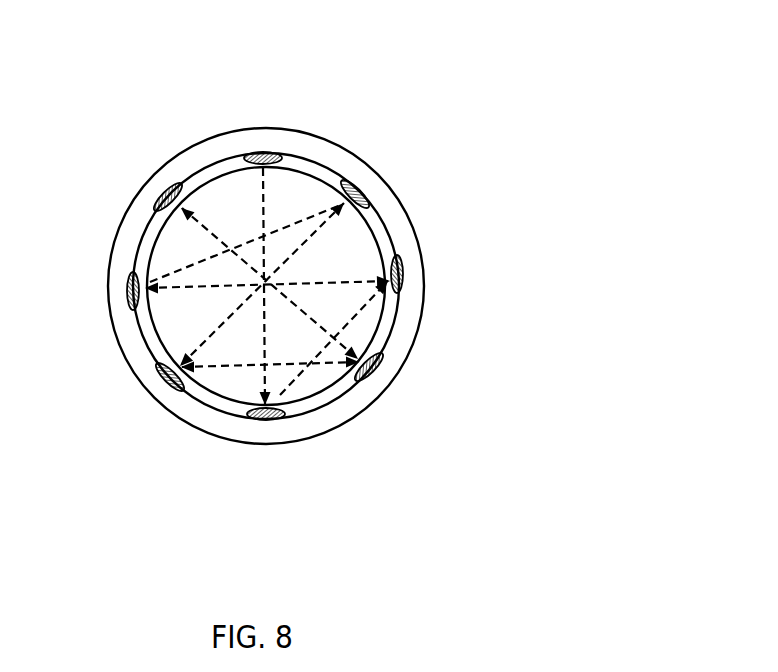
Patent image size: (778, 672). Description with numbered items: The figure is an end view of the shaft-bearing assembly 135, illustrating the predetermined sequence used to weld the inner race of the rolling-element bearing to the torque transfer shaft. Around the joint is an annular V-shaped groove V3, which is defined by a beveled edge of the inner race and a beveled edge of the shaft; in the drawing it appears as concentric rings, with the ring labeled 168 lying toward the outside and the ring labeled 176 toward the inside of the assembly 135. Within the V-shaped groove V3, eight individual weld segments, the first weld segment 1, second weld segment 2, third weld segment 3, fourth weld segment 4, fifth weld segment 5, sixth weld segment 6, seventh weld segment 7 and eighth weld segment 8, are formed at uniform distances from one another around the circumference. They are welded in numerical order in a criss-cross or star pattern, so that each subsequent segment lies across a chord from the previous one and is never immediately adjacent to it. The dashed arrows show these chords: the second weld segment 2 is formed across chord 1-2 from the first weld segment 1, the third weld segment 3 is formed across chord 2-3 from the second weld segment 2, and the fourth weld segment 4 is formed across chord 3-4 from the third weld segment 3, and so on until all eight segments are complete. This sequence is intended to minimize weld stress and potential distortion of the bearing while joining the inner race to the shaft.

The first weld segment 1 is at (268, 150).
The second weld segment 2 is at (267, 428).
The third weld segment 3 is at (412, 277).
The fourth weld segment 4 is at (116, 290).
The fifth weld segment 5 is at (367, 185).
The sixth weld segment 6 is at (162, 382).
The seventh weld segment 7 is at (377, 383).
The eighth weld segment 8 is at (150, 190).
The chord 1-2 is at (257, 205).
The chord 2-3 is at (362, 315).
The chord 3-4 is at (177, 296).
The shaft-bearing assembly 135 is at (424, 229).
The outer wall 168 is at (328, 150).
The inner lumen 176 is at (223, 197).
The annular V-shaped groove V3 is at (386, 230).